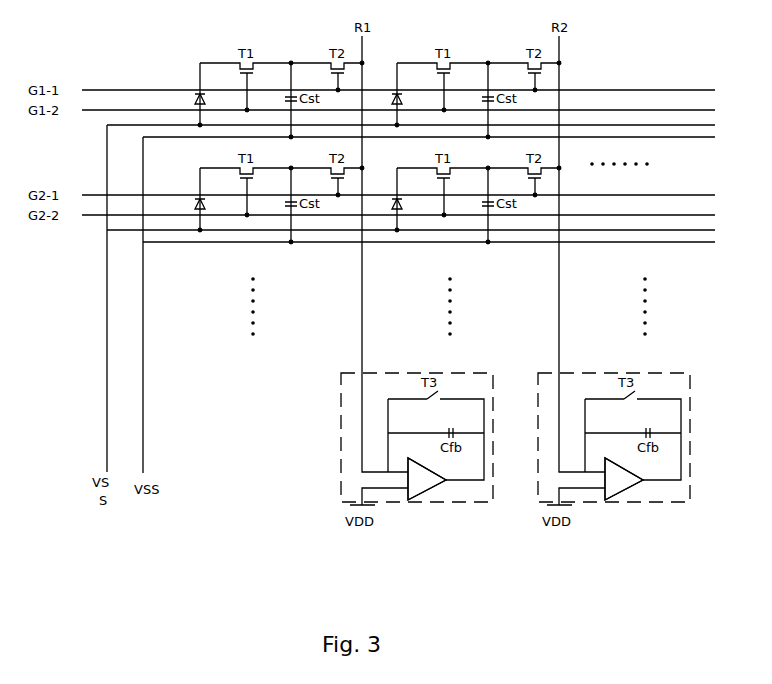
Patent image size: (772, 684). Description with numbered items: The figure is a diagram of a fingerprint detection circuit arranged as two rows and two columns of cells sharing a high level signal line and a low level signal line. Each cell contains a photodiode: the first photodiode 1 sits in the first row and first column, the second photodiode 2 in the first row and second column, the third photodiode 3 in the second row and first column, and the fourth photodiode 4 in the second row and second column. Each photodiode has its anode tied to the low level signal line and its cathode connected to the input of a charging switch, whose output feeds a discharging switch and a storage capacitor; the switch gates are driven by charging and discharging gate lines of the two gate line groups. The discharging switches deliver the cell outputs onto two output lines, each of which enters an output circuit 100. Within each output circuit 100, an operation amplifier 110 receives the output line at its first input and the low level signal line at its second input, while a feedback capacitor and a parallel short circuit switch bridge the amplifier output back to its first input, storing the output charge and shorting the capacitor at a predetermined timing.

The output circuit 100 is at (341, 416).
The operation amplifier 110 is at (418, 486).
The first photodiode D1 1 is at (189, 100).
The second photodiode D2 2 is at (386, 100).
The third photodiode D3 3 is at (189, 205).
The fourth photodiode D4 4 is at (386, 205).